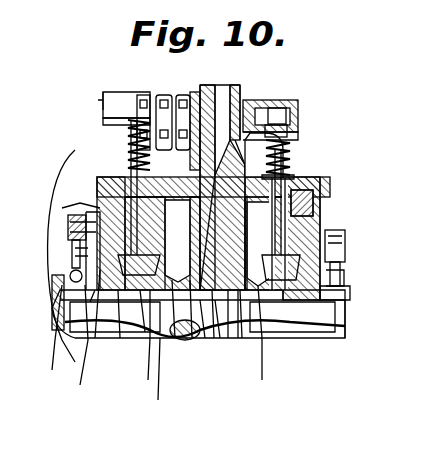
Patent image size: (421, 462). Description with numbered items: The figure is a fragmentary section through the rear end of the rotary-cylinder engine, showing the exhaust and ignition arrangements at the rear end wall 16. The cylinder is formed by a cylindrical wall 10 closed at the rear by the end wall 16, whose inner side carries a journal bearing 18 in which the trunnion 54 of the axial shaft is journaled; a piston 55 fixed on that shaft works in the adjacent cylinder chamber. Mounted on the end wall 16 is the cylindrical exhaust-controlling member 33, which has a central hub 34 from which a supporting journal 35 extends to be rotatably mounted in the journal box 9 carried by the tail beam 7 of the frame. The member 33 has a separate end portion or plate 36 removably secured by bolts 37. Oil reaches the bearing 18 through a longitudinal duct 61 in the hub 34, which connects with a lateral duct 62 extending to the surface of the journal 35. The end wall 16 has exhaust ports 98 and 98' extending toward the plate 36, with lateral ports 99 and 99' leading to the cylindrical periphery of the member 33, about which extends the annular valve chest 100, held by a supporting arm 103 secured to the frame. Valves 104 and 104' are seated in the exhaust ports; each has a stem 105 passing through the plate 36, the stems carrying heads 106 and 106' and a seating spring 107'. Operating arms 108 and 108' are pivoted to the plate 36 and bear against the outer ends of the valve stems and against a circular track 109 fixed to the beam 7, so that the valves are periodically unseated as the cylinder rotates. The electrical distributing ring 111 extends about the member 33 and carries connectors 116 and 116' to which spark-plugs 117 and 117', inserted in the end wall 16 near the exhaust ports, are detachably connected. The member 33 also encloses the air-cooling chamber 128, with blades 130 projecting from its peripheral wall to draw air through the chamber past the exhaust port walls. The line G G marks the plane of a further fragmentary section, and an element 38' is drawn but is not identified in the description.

The tail beam 7 is at (112, 92).
The journal box 9 is at (258, 108).
The cylindrical wall 10 is at (295, 320).
The rear end wall 16 is at (150, 338).
The journal bearing 18 is at (177, 338).
The exhaust-controlling member 33 is at (330, 338).
The central hub 34 is at (235, 338).
The supporting journal 35 is at (205, 95).
The end portion or plate 36 is at (318, 205).
The bolts 37 is at (262, 155).
The cam follower 38' is at (257, 343).
The trunnion 54 is at (196, 338).
The piston 55 is at (120, 338).
The longitudinal duct 61 is at (148, 372).
The lateral duct 62 is at (222, 86).
The exhaust port 98 is at (107, 329).
The exhaust port 98' is at (233, 355).
The lateral port 99 is at (102, 220).
The lateral port 99' is at (321, 215).
The annular valve chest 100 is at (314, 212).
The supporting arm 103 is at (80, 205).
The valve 104 is at (106, 303).
The valve 104' is at (254, 358).
The valve stem 105 is at (66, 300).
The head 106 is at (117, 145).
The head 106' is at (310, 157).
The seating spring 107' is at (305, 169).
The operating arm 108 is at (108, 112).
The operating arm 108' is at (303, 134).
The circular track 109 is at (292, 128).
The electrical distributing ring 111 is at (344, 240).
The electrical connector 116 is at (59, 337).
The electrical connector 116' is at (353, 274).
The spark-plug 117 is at (83, 346).
The spark-plug 117' is at (356, 275).
The chamber 128 is at (158, 400).
The blades 130 is at (102, 205).
The section line G G is at (354, 216).